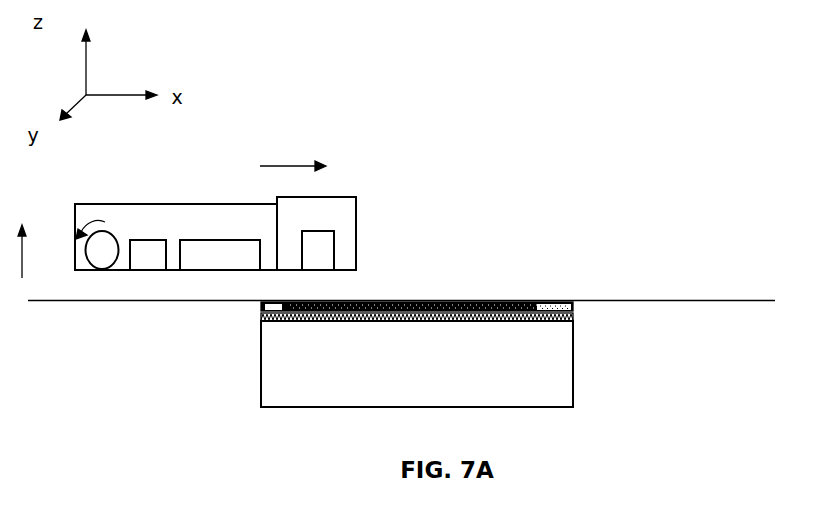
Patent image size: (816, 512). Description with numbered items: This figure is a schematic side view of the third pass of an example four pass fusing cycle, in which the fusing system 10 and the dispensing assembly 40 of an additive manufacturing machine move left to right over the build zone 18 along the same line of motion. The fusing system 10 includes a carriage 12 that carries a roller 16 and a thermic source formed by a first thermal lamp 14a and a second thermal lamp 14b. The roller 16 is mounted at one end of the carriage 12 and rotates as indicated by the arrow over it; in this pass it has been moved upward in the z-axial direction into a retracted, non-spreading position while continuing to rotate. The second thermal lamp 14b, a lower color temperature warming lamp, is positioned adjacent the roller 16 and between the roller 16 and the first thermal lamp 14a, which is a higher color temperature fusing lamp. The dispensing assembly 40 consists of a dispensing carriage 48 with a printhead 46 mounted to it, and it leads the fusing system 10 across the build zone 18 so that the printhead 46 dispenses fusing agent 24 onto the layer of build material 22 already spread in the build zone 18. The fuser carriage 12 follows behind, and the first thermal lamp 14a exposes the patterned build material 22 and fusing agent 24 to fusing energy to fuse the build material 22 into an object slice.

The fusing system 10 is at (221, 160).
The carriage 12 is at (157, 204).
The first thermal lamp 14a is at (215, 258).
The second thermal lamp 14b is at (153, 258).
The roller 16 is at (104, 250).
The build zone 18 is at (409, 374).
The build material 22 is at (572, 307).
The fusing agent 24 is at (502, 300).
The dispensing assembly 40 is at (383, 251).
The printhead 46 is at (320, 243).
The dispensing carriage 48 is at (357, 220).